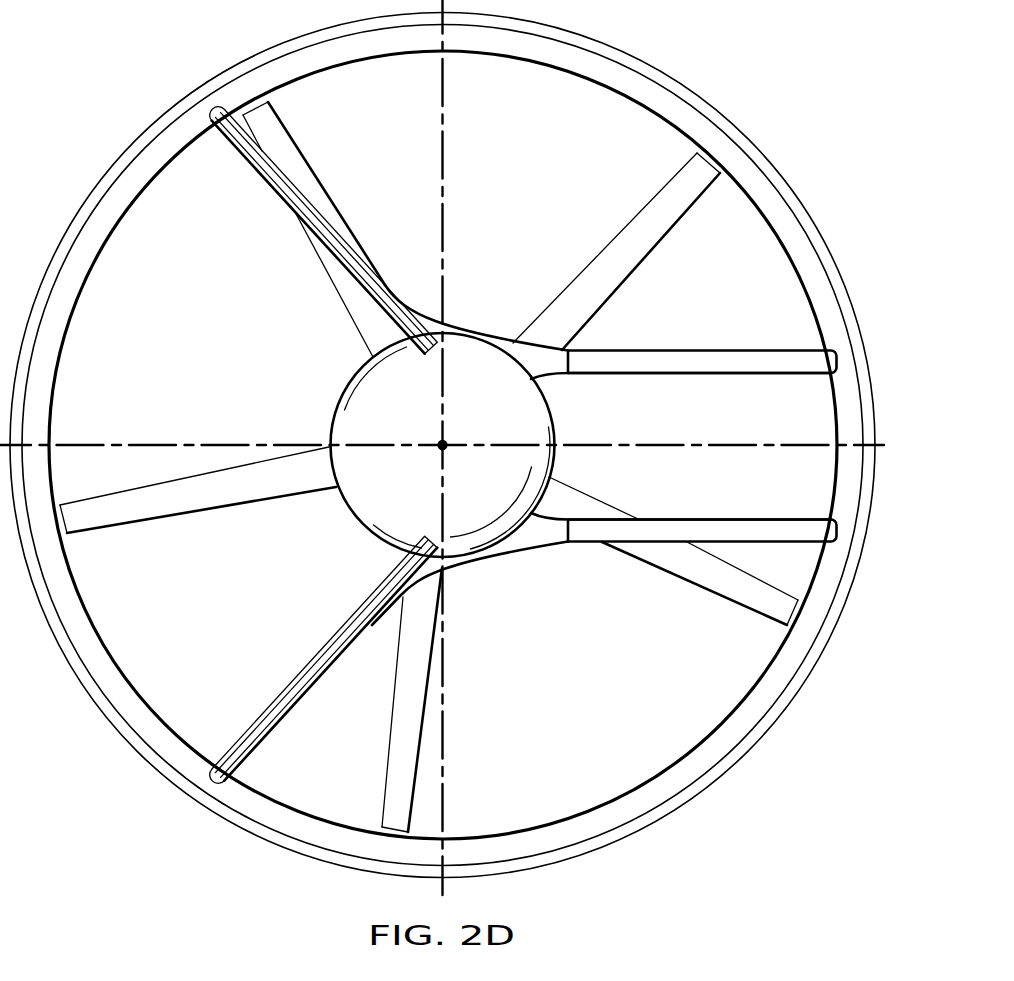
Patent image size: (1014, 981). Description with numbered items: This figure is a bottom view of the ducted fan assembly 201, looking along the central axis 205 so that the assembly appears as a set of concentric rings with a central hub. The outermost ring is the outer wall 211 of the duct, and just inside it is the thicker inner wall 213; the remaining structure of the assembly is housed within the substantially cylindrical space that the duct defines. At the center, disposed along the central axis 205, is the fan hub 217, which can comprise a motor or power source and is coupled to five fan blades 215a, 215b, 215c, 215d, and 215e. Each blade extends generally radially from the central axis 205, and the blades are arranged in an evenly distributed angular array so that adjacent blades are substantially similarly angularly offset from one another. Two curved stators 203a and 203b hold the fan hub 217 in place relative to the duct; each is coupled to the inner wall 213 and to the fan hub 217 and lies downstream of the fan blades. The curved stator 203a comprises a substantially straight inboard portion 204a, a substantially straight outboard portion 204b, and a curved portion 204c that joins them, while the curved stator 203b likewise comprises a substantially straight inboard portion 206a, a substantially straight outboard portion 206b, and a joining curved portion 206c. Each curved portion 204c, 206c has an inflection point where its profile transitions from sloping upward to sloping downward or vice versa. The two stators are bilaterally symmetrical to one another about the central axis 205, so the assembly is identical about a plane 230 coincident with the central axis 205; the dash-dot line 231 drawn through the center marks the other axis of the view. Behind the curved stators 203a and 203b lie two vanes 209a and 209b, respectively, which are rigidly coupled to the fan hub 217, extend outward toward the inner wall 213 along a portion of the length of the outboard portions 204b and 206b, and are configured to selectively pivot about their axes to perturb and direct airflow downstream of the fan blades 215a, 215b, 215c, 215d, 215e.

The ducted fan assembly 201 is at (149, 109).
The outer wall 211 is at (815, 210).
The inner wall 213 is at (755, 214).
The vertical center axis 231 is at (445, 150).
The plane 230 is at (150, 443).
The central axis 205 is at (438, 450).
The fan hub 217 is at (332, 425).
The curved stator 203a is at (713, 350).
The inboard portion 204a is at (758, 378).
The curved stator 203b is at (790, 544).
The inboard portion 206a is at (698, 519).
The outboard portion 204b is at (287, 213).
The vane 209a is at (273, 177).
The curved portion 204c is at (457, 330).
The outboard portion 206b is at (290, 680).
The vane 209b is at (272, 717).
The curved portion 206c is at (540, 548).
The fan blade 215a is at (698, 585).
The fan blade 215b is at (600, 245).
The fan blade 215c is at (328, 192).
The fan blade 215d is at (203, 512).
The fan blade 215e is at (387, 737).